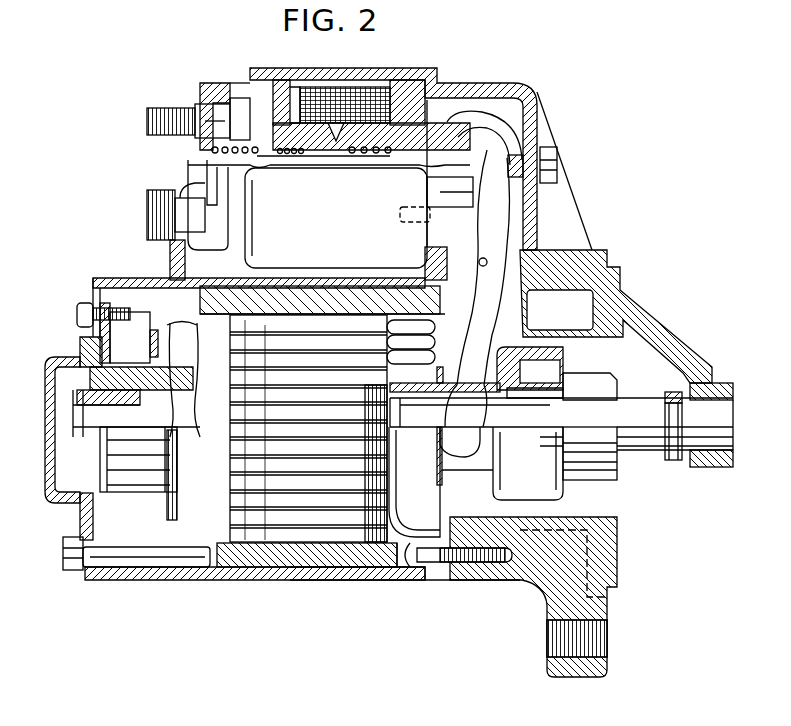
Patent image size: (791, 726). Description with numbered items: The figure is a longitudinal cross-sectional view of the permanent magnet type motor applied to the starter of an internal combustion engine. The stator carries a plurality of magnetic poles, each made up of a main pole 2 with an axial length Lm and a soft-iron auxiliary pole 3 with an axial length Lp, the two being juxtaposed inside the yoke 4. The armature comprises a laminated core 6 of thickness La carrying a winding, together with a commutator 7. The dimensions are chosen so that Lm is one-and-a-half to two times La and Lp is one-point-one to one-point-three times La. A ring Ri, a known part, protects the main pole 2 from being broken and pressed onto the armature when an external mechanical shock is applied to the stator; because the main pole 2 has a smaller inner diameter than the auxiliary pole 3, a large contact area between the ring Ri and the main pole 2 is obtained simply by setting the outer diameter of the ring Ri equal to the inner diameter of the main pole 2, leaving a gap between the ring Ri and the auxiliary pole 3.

The main pole 2 is at (208, 299).
The auxiliary pole 3 is at (258, 560).
The yoke 4 is at (340, 567).
The laminated core 6 is at (246, 467).
The commutator 7 is at (135, 488).
The ring Ri is at (407, 550).